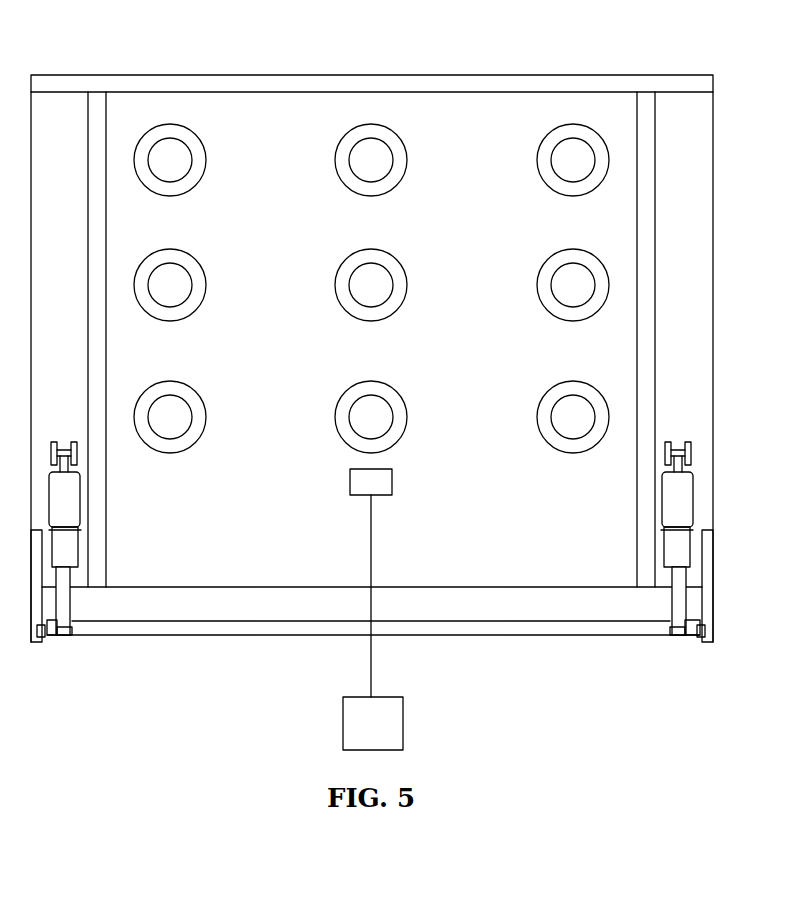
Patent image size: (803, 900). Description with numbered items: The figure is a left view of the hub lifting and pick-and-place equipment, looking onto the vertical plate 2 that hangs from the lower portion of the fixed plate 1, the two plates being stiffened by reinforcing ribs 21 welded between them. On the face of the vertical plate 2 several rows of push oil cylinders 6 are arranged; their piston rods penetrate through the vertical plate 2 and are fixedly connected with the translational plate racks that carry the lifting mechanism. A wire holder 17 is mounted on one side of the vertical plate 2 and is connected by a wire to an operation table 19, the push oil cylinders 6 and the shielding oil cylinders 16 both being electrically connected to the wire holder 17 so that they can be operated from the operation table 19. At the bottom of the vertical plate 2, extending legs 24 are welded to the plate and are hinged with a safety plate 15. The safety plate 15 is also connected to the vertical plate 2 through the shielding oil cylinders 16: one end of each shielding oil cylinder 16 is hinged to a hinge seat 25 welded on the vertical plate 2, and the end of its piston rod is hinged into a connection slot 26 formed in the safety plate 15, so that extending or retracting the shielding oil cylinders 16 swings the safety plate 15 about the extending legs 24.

The fixed plate 1 is at (372, 333).
The vertical plate 2 is at (84, 306).
The push oil cylinders 6 is at (371, 239).
The safety plate 15 is at (373, 660).
The shielding oil cylinders 16 is at (372, 333).
The wire holder 17 is at (316, 584).
The operation table 19 is at (413, 710).
The reinforcing ribs 21 is at (598, 306).
The extending legs 24 is at (370, 662).
The hinge seats 25 is at (371, 296).
The connection slots 26 is at (371, 633).